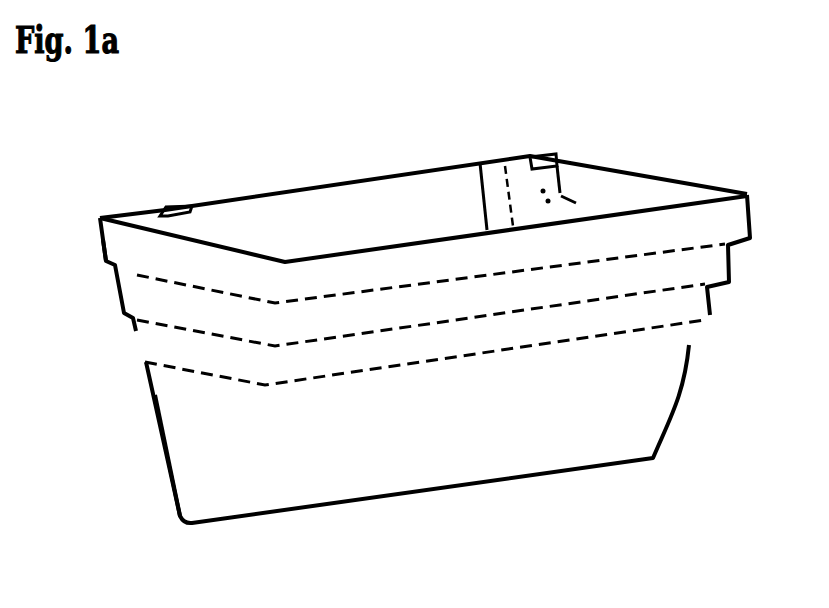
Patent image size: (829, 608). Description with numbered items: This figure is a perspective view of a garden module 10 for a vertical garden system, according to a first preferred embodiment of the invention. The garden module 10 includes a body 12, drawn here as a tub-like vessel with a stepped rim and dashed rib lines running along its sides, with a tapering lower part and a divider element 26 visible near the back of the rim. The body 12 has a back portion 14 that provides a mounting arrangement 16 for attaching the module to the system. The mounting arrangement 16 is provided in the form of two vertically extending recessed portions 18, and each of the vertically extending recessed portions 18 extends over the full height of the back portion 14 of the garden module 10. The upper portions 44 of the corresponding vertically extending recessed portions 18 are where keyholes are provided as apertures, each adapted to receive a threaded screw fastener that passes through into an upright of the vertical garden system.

The garden module 10 is at (573, 513).
The body 12 is at (155, 410).
The back portion 14 is at (252, 167).
The mounting arrangement 16 is at (351, 162).
The vertically extending recessed portions 18 is at (151, 206).
The partition 26 is at (438, 130).
The upper portions 44 is at (88, 253).